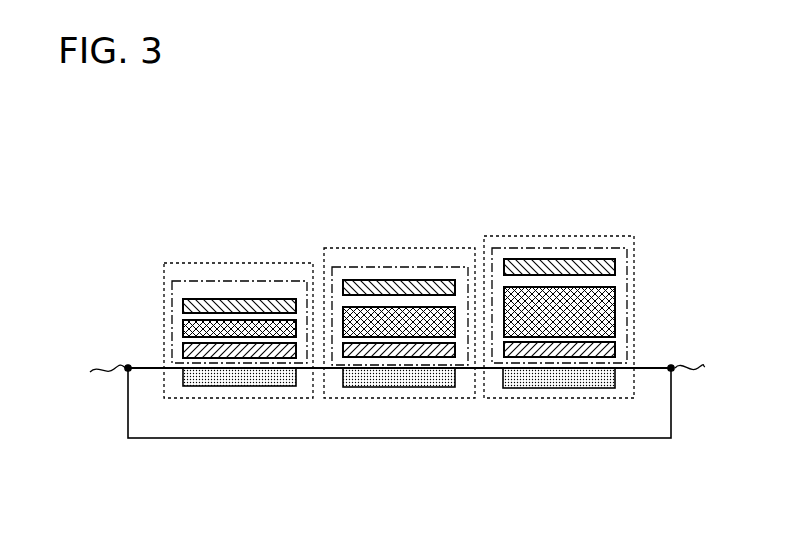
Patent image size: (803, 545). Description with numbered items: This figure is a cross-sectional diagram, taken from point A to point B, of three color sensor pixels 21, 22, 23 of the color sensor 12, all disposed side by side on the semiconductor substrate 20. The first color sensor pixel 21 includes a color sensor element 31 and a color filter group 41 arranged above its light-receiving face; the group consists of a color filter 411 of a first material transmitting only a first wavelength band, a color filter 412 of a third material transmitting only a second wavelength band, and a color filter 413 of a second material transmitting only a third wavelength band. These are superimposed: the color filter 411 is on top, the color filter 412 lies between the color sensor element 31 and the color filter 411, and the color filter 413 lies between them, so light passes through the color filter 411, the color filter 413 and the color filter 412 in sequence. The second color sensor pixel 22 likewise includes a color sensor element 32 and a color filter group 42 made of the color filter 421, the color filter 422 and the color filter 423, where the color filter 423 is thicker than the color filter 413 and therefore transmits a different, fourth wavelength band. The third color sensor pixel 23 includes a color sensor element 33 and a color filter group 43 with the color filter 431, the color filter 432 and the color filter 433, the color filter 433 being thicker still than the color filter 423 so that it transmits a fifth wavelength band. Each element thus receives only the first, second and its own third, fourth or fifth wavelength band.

The color sensor 12 is at (678, 190).
The semiconductor substrate 20 is at (649, 440).
The color sensor pixel 21 is at (200, 263).
The color sensor pixel 22 is at (455, 248).
The color sensor pixel 23 is at (614, 236).
The color sensor element 31 is at (231, 387).
The color sensor element 32 is at (396, 388).
The color sensor element 33 is at (553, 389).
The color filter group 41 is at (164, 290).
The color filter group 42 is at (388, 267).
The color filter group 43 is at (551, 248).
The color filter 411 is at (184, 306).
The color filter 412 is at (184, 350).
The color filter 413 is at (184, 328).
The color filter 421 is at (345, 290).
The color filter 422 is at (344, 351).
The color filter 423 is at (344, 322).
The color filter 431 is at (617, 268).
The color filter 432 is at (617, 352).
The color filter 433 is at (617, 312).